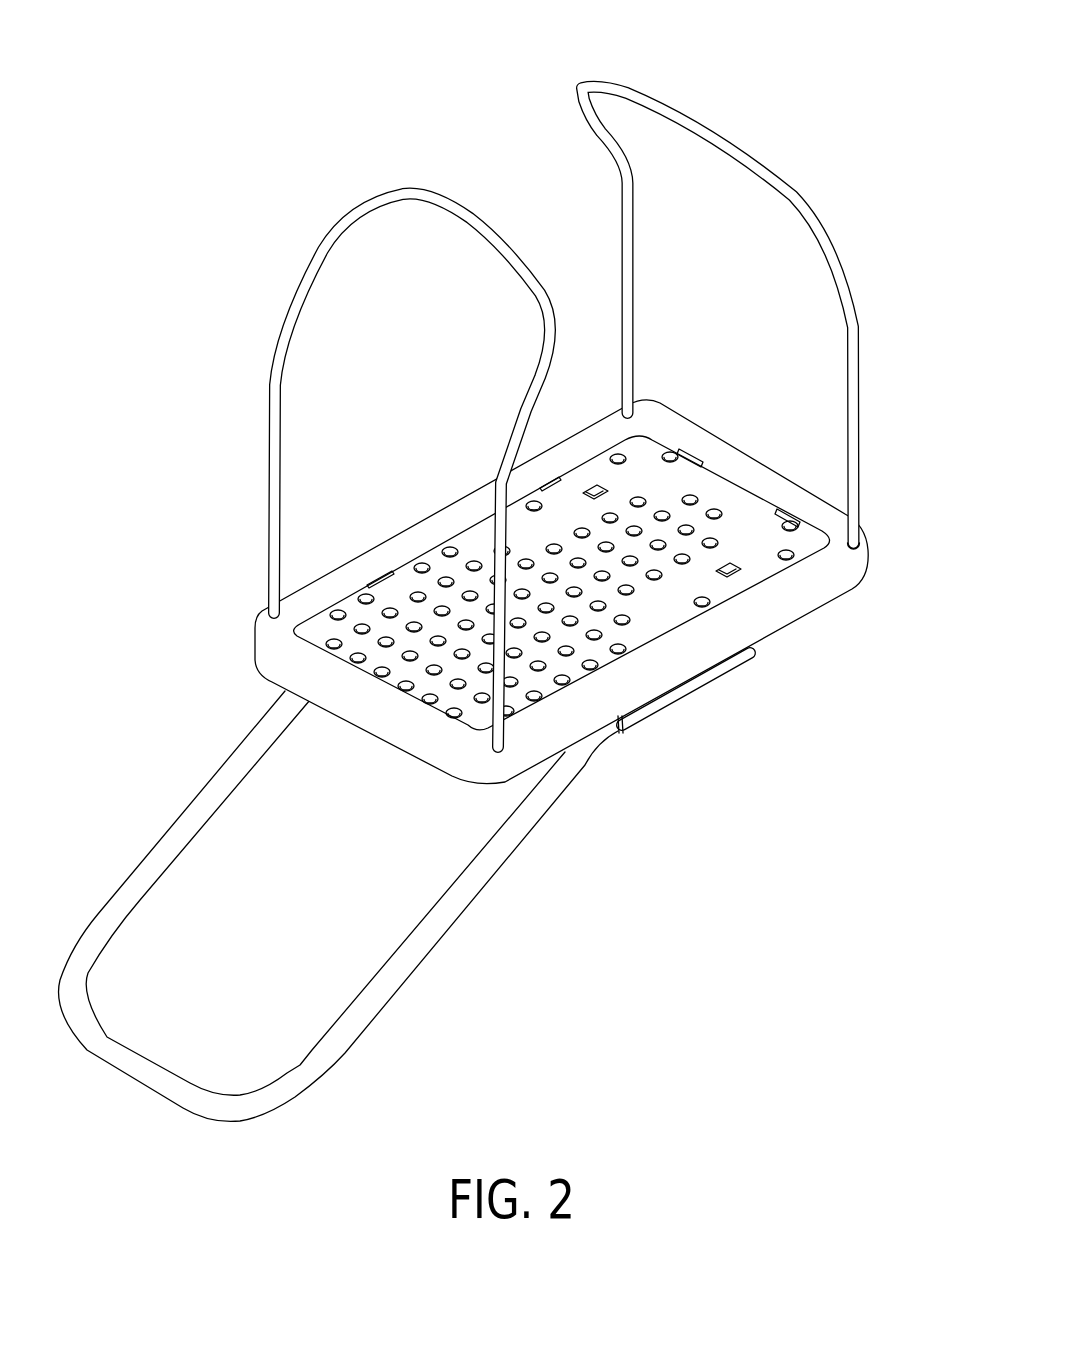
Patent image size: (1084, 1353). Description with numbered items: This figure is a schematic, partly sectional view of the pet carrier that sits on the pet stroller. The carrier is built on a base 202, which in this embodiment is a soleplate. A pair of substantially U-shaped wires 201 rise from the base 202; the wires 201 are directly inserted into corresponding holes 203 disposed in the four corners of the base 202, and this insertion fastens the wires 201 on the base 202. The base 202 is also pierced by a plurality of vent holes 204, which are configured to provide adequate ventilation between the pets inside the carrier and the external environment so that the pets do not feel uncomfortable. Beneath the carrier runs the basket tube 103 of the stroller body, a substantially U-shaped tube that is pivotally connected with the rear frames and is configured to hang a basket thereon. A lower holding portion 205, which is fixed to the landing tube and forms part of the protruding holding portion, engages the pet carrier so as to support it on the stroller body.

The basket tube 103 is at (442, 910).
The wires 201 is at (735, 163).
The base 202 is at (561, 547).
The holes 203 is at (862, 548).
The vent holes 204 is at (639, 497).
The lower holding portion 205 is at (657, 703).